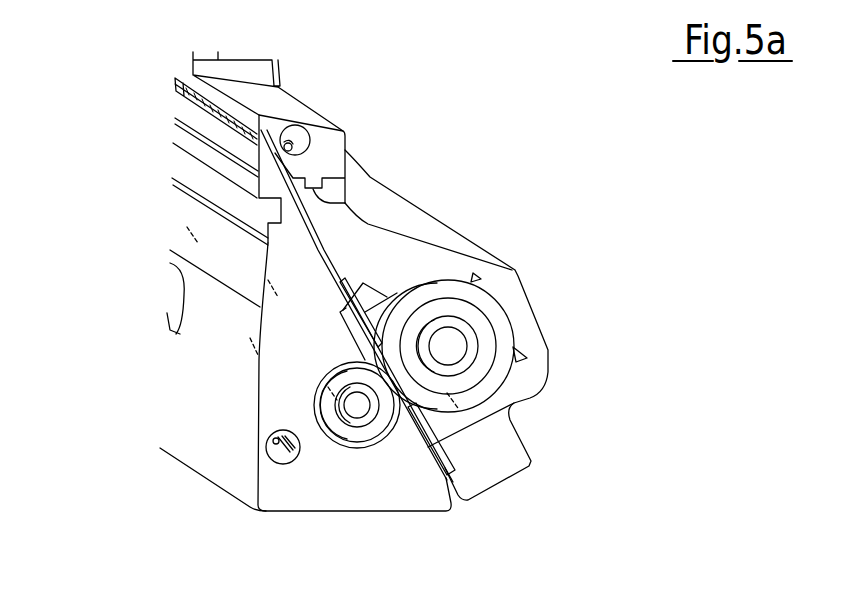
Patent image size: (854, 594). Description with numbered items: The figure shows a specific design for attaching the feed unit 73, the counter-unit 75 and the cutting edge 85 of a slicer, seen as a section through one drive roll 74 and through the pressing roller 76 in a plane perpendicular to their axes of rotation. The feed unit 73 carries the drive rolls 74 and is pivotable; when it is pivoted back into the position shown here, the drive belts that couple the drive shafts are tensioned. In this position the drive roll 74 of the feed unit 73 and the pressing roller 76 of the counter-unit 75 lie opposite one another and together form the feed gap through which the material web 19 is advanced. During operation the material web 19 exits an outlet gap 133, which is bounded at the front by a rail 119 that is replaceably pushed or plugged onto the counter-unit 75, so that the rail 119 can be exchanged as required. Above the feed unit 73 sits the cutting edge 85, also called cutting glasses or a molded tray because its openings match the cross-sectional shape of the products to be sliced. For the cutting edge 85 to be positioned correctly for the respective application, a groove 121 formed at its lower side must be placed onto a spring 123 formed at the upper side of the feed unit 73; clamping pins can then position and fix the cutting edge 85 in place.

The material web 19 is at (315, 250).
The feed unit 73 is at (427, 210).
The drive roll 74 is at (503, 340).
The counter-unit 75 is at (277, 362).
The pressing roller 76 is at (352, 430).
The cutting edge 85 is at (288, 70).
The rail 119 is at (190, 143).
The groove 121 is at (323, 167).
The spring 123 is at (343, 203).
The outlet gap 133 is at (168, 85).